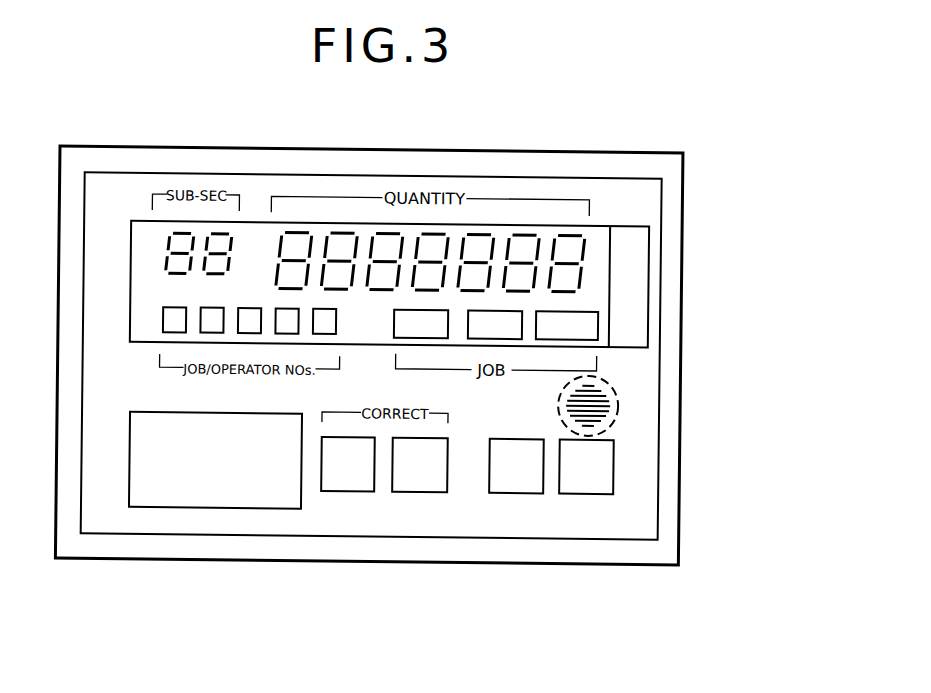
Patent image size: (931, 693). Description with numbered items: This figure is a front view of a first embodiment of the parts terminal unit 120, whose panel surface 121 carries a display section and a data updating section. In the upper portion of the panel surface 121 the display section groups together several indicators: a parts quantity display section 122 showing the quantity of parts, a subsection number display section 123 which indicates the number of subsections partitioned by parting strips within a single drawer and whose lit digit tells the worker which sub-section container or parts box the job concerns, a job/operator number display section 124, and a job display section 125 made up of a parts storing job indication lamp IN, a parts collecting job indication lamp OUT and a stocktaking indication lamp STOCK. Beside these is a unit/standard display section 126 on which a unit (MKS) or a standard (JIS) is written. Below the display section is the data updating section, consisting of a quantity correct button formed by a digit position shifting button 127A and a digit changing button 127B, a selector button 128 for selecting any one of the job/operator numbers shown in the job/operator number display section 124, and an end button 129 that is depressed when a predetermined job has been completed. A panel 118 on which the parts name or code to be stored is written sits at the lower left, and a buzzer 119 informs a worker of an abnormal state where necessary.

The panel 118 is at (197, 507).
The buzzer 119 is at (622, 405).
The parts terminal unit 120 is at (280, 146).
The panel surface 121 is at (607, 190).
The parts quantity display section 122 is at (483, 230).
The subsection number display section 123 is at (159, 244).
The job/operator number display section 124 is at (162, 318).
The job display section 125 is at (606, 320).
The unit/standard display section 126 is at (650, 261).
The digit position shifting button 127A is at (344, 491).
The digit changing button 127B is at (407, 491).
The selector button 128 is at (514, 491).
The end button 129 is at (594, 491).